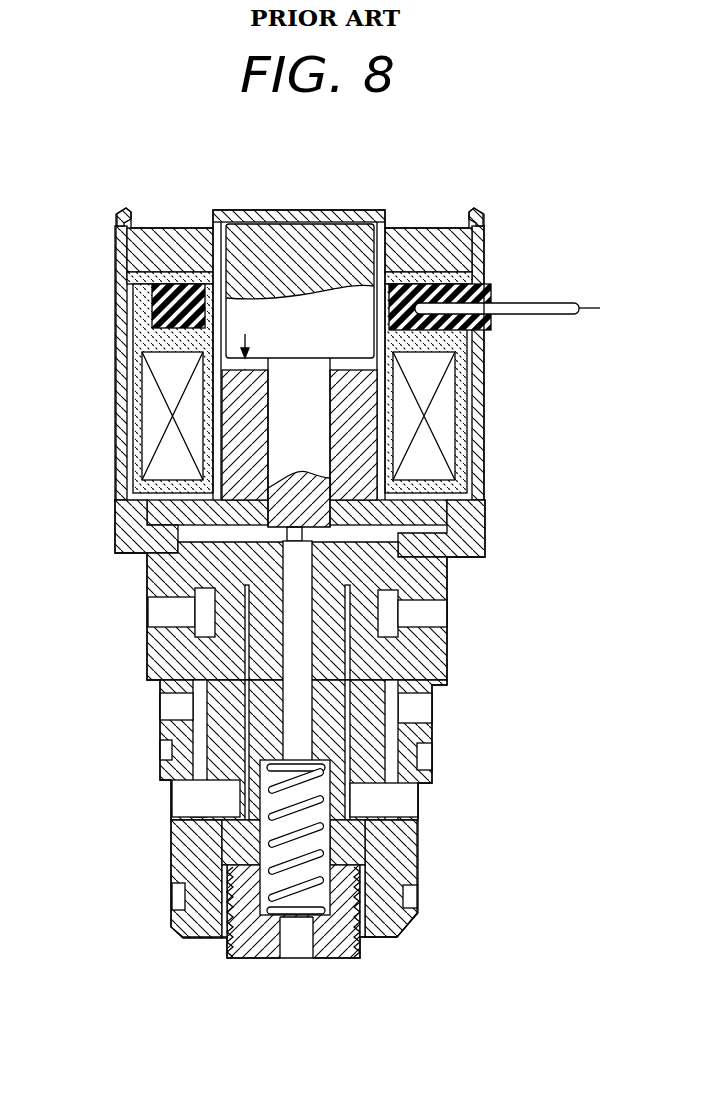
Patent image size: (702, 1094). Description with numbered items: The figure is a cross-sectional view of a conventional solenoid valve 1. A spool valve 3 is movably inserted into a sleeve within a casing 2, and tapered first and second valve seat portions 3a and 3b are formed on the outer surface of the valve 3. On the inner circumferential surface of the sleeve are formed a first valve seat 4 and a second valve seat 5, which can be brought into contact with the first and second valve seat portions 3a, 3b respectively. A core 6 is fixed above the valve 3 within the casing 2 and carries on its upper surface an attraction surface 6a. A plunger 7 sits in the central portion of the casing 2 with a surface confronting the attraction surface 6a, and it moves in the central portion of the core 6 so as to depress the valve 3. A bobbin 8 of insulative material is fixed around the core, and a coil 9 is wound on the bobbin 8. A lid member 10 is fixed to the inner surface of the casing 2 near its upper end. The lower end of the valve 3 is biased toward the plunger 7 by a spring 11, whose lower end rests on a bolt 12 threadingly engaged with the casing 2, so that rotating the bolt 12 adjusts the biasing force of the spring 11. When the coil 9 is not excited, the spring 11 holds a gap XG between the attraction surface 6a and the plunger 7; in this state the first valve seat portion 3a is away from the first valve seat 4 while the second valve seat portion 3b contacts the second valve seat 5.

The solenoid valve 1 is at (516, 536).
The casing 2 is at (486, 552).
The spool valve 3 is at (345, 848).
The first valve seat portion 3a is at (432, 732).
The second valve seat portion 3b is at (162, 684).
The first valve seat 4 is at (432, 773).
The second valve seat 5 is at (390, 657).
The core 6 is at (450, 514).
The attraction surface 6a is at (365, 362).
The plunger 7 is at (341, 240).
The bobbin 8 is at (140, 492).
The coil 9 is at (440, 430).
The lid member 10 is at (430, 240).
The spring 11 is at (263, 908).
The bolt 12 is at (343, 940).
The gap XG is at (243, 357).